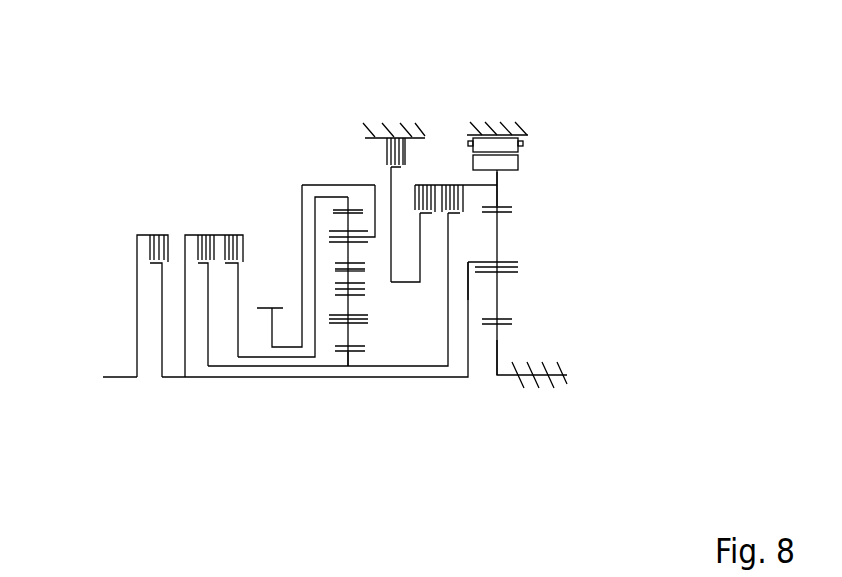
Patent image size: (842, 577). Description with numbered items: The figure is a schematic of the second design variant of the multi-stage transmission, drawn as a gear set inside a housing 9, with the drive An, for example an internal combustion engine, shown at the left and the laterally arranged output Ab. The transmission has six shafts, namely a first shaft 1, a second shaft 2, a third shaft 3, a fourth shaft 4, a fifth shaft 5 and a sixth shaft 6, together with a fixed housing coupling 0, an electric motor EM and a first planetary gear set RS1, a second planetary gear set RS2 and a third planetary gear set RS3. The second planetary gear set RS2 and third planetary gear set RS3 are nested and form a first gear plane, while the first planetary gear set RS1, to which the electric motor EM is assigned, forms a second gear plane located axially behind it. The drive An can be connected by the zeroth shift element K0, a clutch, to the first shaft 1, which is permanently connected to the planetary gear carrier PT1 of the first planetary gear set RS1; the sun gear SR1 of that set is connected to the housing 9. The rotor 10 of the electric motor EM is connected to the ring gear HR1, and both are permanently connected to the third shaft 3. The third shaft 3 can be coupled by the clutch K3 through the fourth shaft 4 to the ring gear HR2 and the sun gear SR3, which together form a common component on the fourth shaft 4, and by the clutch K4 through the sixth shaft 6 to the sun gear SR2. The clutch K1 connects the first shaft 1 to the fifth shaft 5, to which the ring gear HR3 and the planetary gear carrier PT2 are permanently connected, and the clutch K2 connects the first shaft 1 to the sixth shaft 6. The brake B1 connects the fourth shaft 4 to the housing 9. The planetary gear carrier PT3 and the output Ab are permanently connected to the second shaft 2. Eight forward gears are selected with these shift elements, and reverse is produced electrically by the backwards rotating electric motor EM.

The zeroth shift element K0 is at (148, 227).
The first shift element K1 is at (228, 227).
The second shift element K2 is at (195, 227).
The third shift element K3 is at (423, 180).
The fourth shift element K4 is at (453, 172).
The fifth shift element B1 is at (383, 153).
The electric motor EM is at (527, 145).
The drive An is at (120, 367).
The output Ab is at (279, 266).
The housing 9 is at (392, 125).
The rotor 10 is at (520, 163).
The third shaft 3 is at (499, 192).
The second shaft 2 is at (375, 240).
The fourth shaft 4 is at (360, 274).
The fifth shaft 5 is at (328, 186).
The sixth shaft 6 is at (349, 362).
The first shaft 1 is at (475, 270).
The fixed housing coupling 0 is at (500, 365).
The ring gear of the first planetary gear set HR1 is at (514, 208).
The planetary gear carrier of the first planetary gear set PT1 is at (511, 275).
The sun gear of the first planetary gear set SR1 is at (513, 327).
The first planetary gear set RS1 is at (497, 405).
The ring gear of the second planetary gear set HR2 is at (334, 284).
The planetary gear carrier of the second planetary gear set PT2 is at (366, 330).
The sun gear of the second planetary gear set SR2 is at (352, 353).
The second planetary gear set RS2 is at (350, 509).
The ring gear of the third planetary gear set HR3 is at (353, 200).
The planetary gear carrier of the third planetary gear set PT3 is at (333, 228).
The sun gear of the third planetary gear set SR3 is at (336, 289).
The third planetary gear set RS3 is at (350, 405).